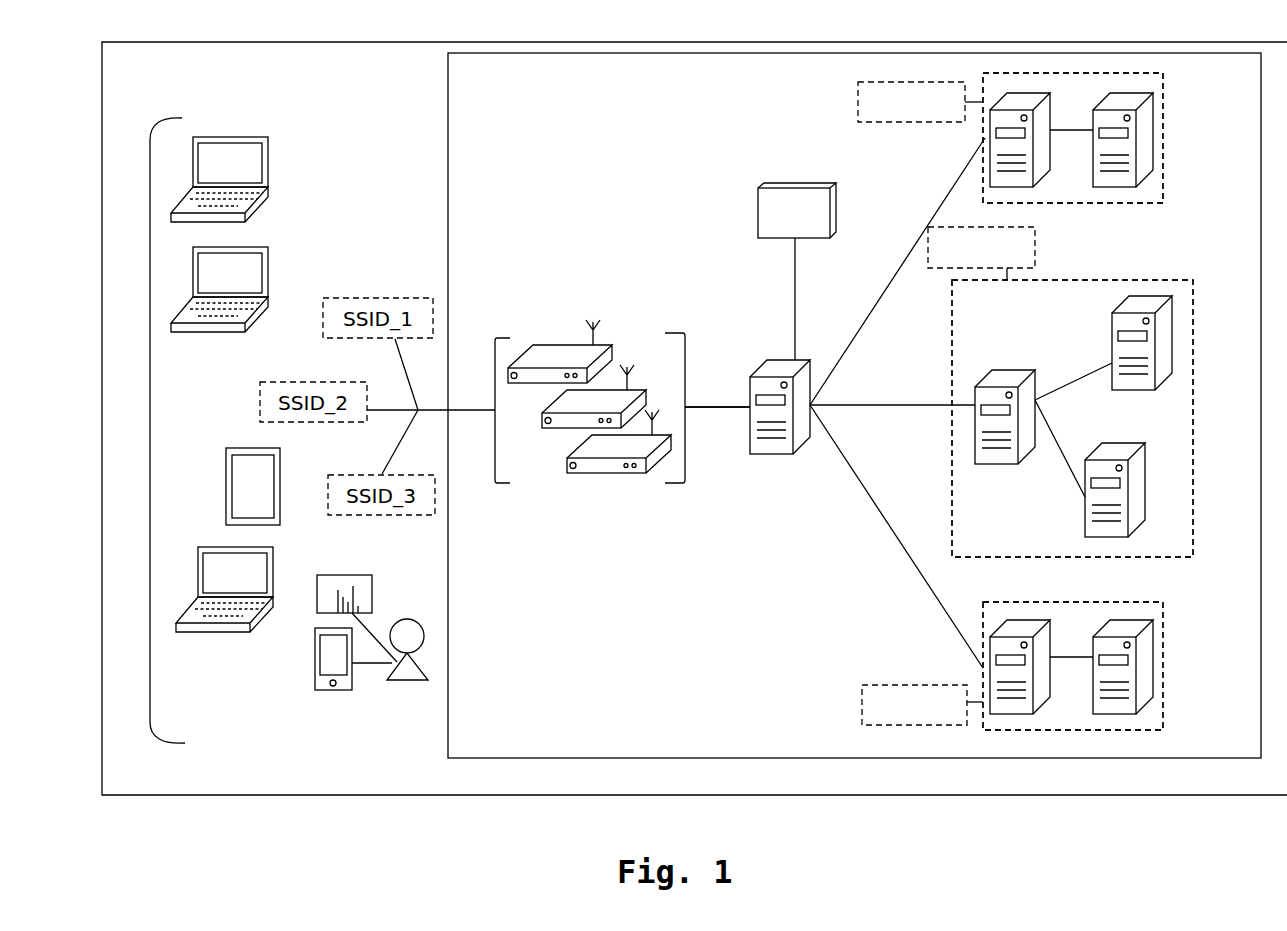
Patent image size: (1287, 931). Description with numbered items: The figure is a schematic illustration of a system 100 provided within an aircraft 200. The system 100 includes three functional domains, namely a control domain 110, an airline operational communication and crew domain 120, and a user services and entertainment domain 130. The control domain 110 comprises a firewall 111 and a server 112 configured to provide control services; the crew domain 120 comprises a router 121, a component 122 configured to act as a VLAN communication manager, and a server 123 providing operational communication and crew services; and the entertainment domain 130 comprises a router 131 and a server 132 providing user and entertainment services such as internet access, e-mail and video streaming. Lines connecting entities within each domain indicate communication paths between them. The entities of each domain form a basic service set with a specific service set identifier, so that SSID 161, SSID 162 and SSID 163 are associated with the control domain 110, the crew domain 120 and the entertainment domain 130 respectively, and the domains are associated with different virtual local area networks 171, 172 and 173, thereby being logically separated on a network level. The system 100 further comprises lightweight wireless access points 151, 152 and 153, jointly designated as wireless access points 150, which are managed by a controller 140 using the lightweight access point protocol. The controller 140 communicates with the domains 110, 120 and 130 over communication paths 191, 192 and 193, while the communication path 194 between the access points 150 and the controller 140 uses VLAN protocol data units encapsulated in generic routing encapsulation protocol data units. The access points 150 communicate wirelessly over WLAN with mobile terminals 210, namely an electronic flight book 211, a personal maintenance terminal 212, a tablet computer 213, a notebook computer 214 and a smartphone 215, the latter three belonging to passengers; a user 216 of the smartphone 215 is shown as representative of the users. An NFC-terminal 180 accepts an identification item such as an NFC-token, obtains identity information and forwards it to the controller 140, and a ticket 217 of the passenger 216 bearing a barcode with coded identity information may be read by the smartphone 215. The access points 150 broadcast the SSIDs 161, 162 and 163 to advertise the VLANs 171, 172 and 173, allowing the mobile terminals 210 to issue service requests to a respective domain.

The system 100 is at (510, 91).
The aircraft 200 is at (153, 81).
The mobile terminals 210 is at (150, 430).
The electronic flight book 211 is at (223, 137).
The personal maintenance terminal 212 is at (222, 332).
The tablet computer 213 is at (225, 482).
The notebook computer 214 is at (237, 630).
The smartphone 215 is at (317, 675).
The user 216 is at (400, 687).
The ticket 217 is at (375, 595).
The wireless access points 150 is at (697, 412).
The wireless access point 151 is at (557, 345).
The wireless access point 152 is at (556, 428).
The wireless access point 153 is at (610, 473).
The controller 140 is at (772, 355).
The NFC-terminal 180 is at (785, 183).
The communication path 191 is at (892, 280).
The communication path 192 is at (910, 408).
The communication path 193 is at (887, 518).
The communication path 194 is at (725, 400).
The control domain 110 is at (1165, 93).
The airline operational communication and crew domain 120 is at (1158, 281).
The user services and entertainment domain 130 is at (1165, 620).
The virtual local area network 171 is at (1165, 140).
The virtual local area network 172 is at (1190, 280).
The virtual local area network 173 is at (1165, 672).
The firewall 111 is at (1010, 187).
The server 112 is at (1112, 187).
The router 121 is at (1008, 372).
The component 122 is at (1112, 323).
The server 123 is at (1123, 445).
The router 131 is at (1013, 623).
The server 132 is at (1118, 623).
The service set identifier 161 is at (858, 102).
The service set identifier 162 is at (1036, 246).
The service set identifier 163 is at (887, 687).